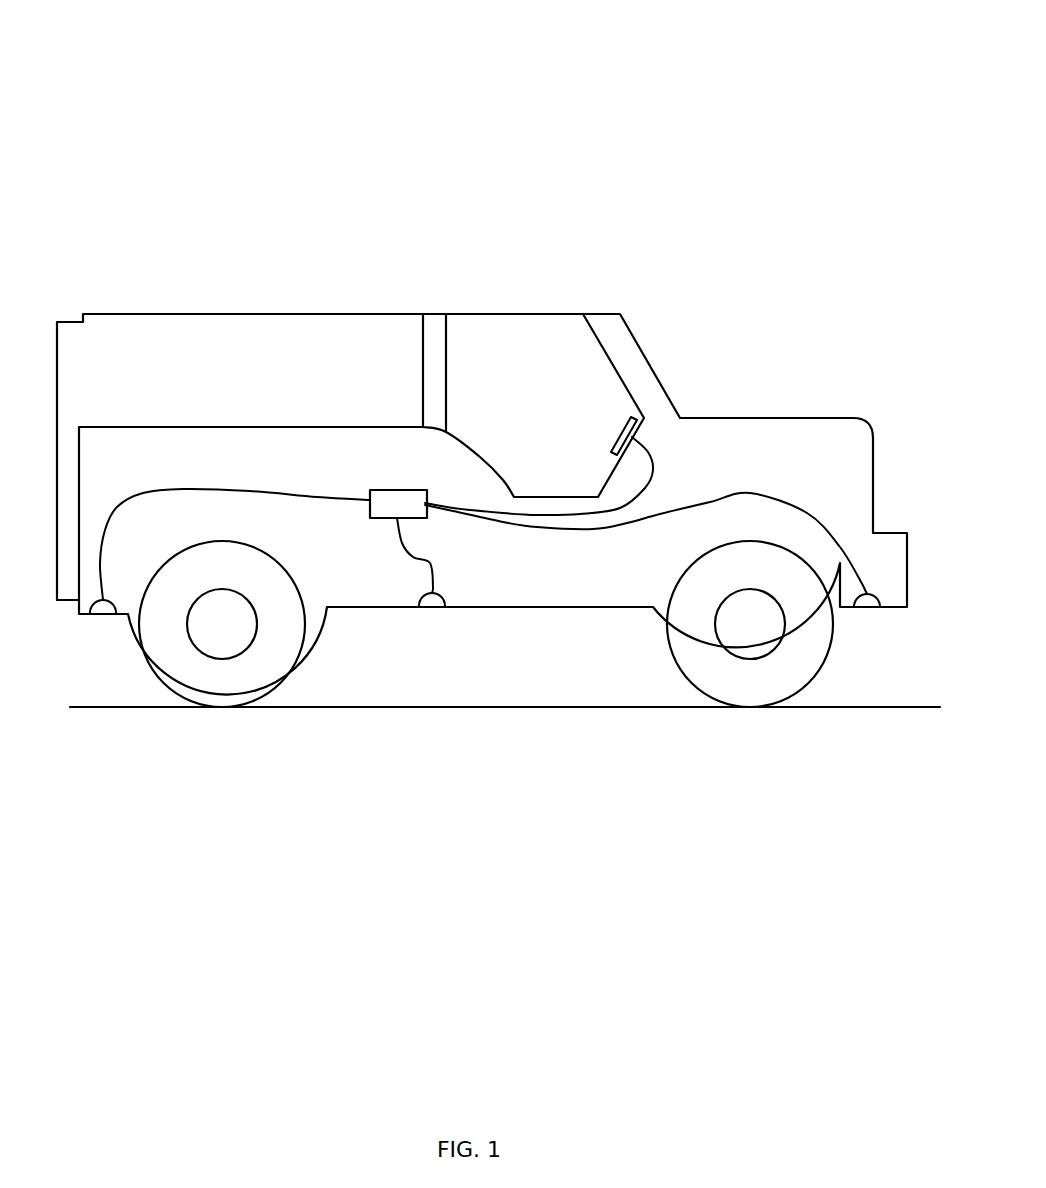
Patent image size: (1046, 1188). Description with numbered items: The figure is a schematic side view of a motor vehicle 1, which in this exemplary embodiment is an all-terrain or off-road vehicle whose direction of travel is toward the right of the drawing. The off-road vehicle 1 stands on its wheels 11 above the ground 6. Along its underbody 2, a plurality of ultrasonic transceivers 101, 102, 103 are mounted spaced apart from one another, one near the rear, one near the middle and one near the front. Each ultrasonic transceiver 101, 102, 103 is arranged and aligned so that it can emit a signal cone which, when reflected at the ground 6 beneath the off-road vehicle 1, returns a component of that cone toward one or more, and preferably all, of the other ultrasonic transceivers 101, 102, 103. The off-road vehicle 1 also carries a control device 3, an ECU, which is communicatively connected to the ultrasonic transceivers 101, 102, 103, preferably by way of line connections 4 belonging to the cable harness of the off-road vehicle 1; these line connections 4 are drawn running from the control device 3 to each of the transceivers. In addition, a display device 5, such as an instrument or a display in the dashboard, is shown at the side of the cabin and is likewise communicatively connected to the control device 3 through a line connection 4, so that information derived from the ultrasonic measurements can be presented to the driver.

The motor vehicle 1 is at (486, 367).
The underbody 2 is at (478, 622).
The control device 3 is at (395, 490).
The line connections 4 is at (786, 492).
The display device 5 is at (616, 441).
The ground 6 is at (532, 692).
The wheel 11 is at (307, 639).
The ultrasonic transceiver 101 is at (103, 615).
The ultrasonic transceiver 102 is at (430, 608).
The ultrasonic transceiver 103 is at (867, 609).